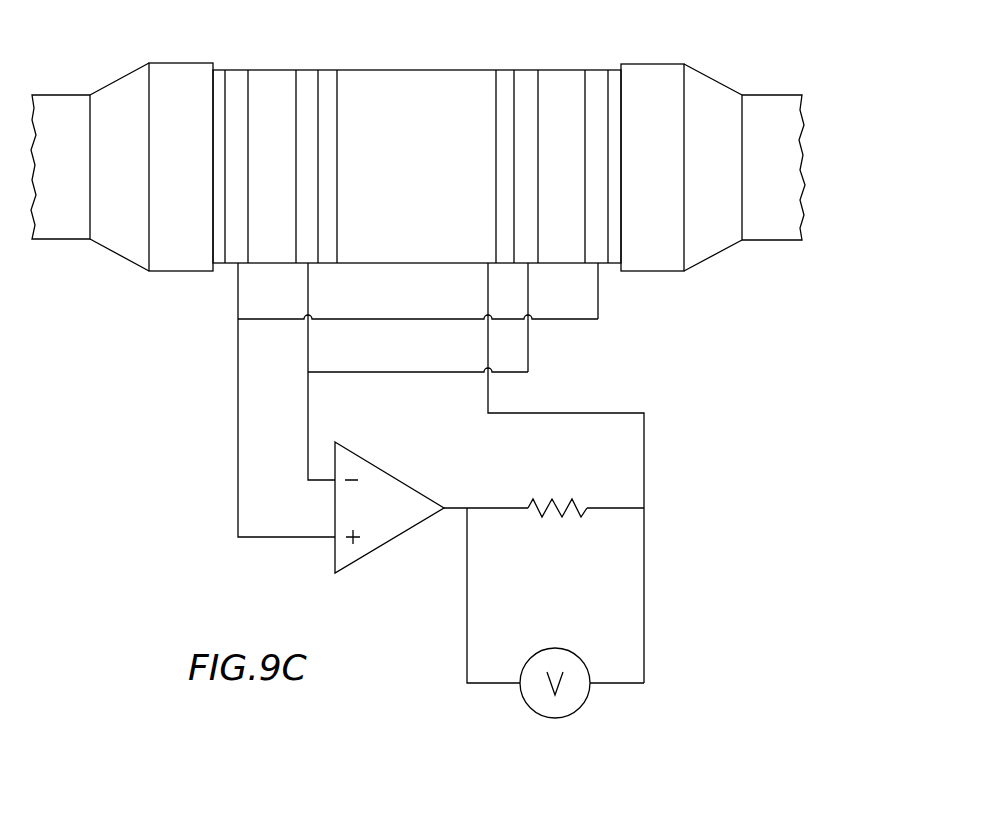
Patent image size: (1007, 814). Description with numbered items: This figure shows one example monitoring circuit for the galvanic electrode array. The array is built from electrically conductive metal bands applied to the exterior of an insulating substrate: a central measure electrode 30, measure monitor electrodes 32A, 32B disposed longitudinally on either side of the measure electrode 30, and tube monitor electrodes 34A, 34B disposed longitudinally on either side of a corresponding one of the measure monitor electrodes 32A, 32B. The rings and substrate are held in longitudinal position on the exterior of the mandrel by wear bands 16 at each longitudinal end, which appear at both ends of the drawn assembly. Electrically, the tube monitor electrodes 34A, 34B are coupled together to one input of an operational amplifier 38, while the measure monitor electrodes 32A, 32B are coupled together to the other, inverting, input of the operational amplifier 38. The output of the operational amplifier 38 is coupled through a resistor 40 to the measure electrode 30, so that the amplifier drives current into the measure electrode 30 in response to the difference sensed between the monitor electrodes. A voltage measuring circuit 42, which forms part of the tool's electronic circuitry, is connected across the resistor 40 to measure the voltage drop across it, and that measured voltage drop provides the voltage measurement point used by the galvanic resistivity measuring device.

The wear band 16 is at (110, 83).
The measure electrode 30 is at (387, 70).
The measure monitor electrode 32A is at (523, 70).
The measure monitor electrode 32B is at (309, 70).
The tube monitor electrode 34A is at (598, 70).
The tube monitor electrode 34B is at (238, 70).
The operational amplifier 38 is at (385, 550).
The resistor 40 is at (550, 516).
The voltage measuring circuit 42 is at (567, 650).